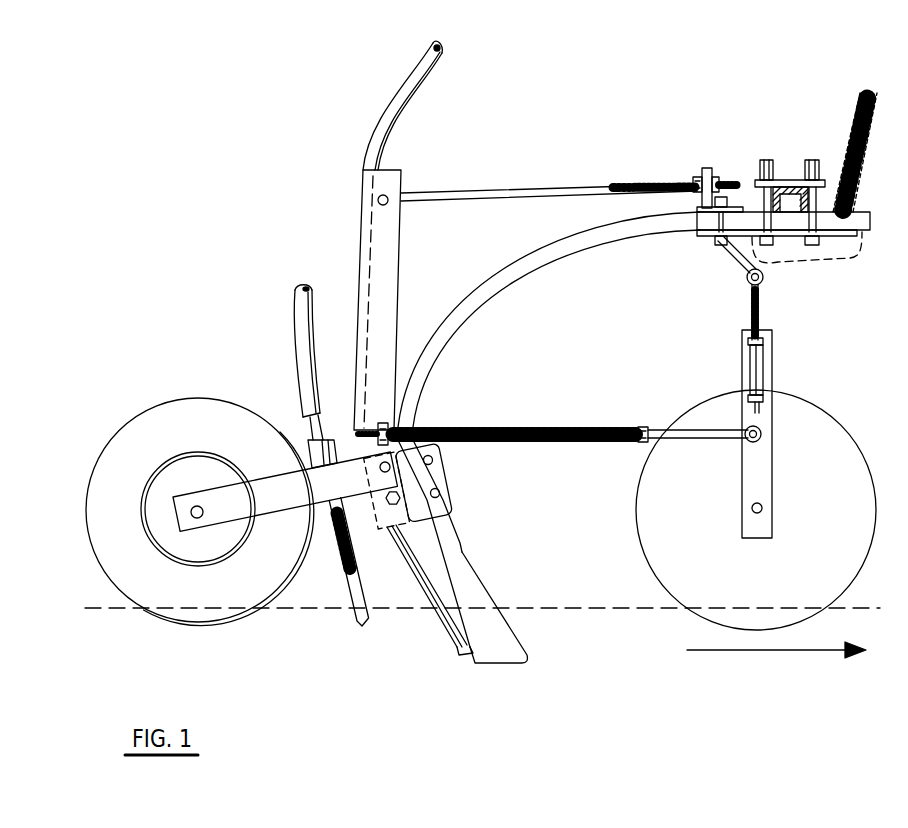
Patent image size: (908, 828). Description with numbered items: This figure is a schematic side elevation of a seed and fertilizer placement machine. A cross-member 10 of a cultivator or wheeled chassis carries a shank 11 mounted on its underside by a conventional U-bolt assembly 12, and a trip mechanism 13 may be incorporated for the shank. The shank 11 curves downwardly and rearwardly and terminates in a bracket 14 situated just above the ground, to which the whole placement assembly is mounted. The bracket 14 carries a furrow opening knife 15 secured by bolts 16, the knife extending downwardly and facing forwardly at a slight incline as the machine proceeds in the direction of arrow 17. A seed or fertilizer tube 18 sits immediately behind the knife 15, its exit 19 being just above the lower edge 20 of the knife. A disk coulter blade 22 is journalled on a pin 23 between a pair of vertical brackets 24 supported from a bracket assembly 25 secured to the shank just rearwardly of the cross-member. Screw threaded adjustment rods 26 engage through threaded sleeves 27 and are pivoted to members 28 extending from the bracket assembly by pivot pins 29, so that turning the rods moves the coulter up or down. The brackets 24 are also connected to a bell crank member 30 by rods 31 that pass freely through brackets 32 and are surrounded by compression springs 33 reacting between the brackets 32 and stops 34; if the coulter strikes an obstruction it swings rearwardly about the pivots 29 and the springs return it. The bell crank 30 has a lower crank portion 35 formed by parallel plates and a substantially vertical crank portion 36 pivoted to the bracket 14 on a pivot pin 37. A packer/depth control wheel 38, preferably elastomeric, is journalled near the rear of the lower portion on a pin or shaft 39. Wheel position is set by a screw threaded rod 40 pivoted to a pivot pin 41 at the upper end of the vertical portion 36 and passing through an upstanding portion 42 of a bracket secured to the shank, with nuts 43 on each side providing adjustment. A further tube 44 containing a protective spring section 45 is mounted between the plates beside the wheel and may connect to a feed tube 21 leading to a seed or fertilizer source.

The cross-member 10 is at (790, 182).
The shank 11 is at (488, 283).
The U-bolt assembly 12 is at (780, 180).
The trip mechanism 13 is at (846, 125).
The bracket 14 is at (446, 490).
The furrow opening knife 15 is at (478, 565).
The bolts 16 is at (433, 460).
The arrow 17 is at (785, 651).
The seed or fertilizer tube 18 is at (438, 599).
The exit 19 is at (462, 653).
The lower edge 20 is at (485, 666).
The feed tube 21 is at (295, 322).
The disk coulter blade 22 is at (820, 422).
The pin 23 is at (763, 508).
The vertical brackets 24 is at (768, 482).
The bracket assembly 25 is at (702, 213).
The screw threaded adjustment rods 26 is at (760, 323).
The threaded sleeves 27 is at (760, 368).
The members 28 is at (735, 263).
The pivot pins 29 is at (763, 279).
The bell crank member 30 is at (292, 500).
The rods 31 is at (710, 440).
The brackets 32 is at (383, 422).
The compression springs 33 is at (548, 426).
The stops 34 is at (645, 426).
The lower crank portion 35 is at (278, 480).
The vertical crank portion 36 is at (397, 265).
The pivot pin 37 is at (372, 466).
The packer/depth control wheel 38 is at (190, 400).
The pin or shaft 39 is at (203, 516).
The screw threaded rod 40 is at (563, 183).
The pivot pin 41 is at (386, 206).
The upstanding portion 42 is at (710, 168).
The nuts 43 is at (697, 178).
The further tube 44 is at (360, 575).
The spring section 45 is at (352, 545).